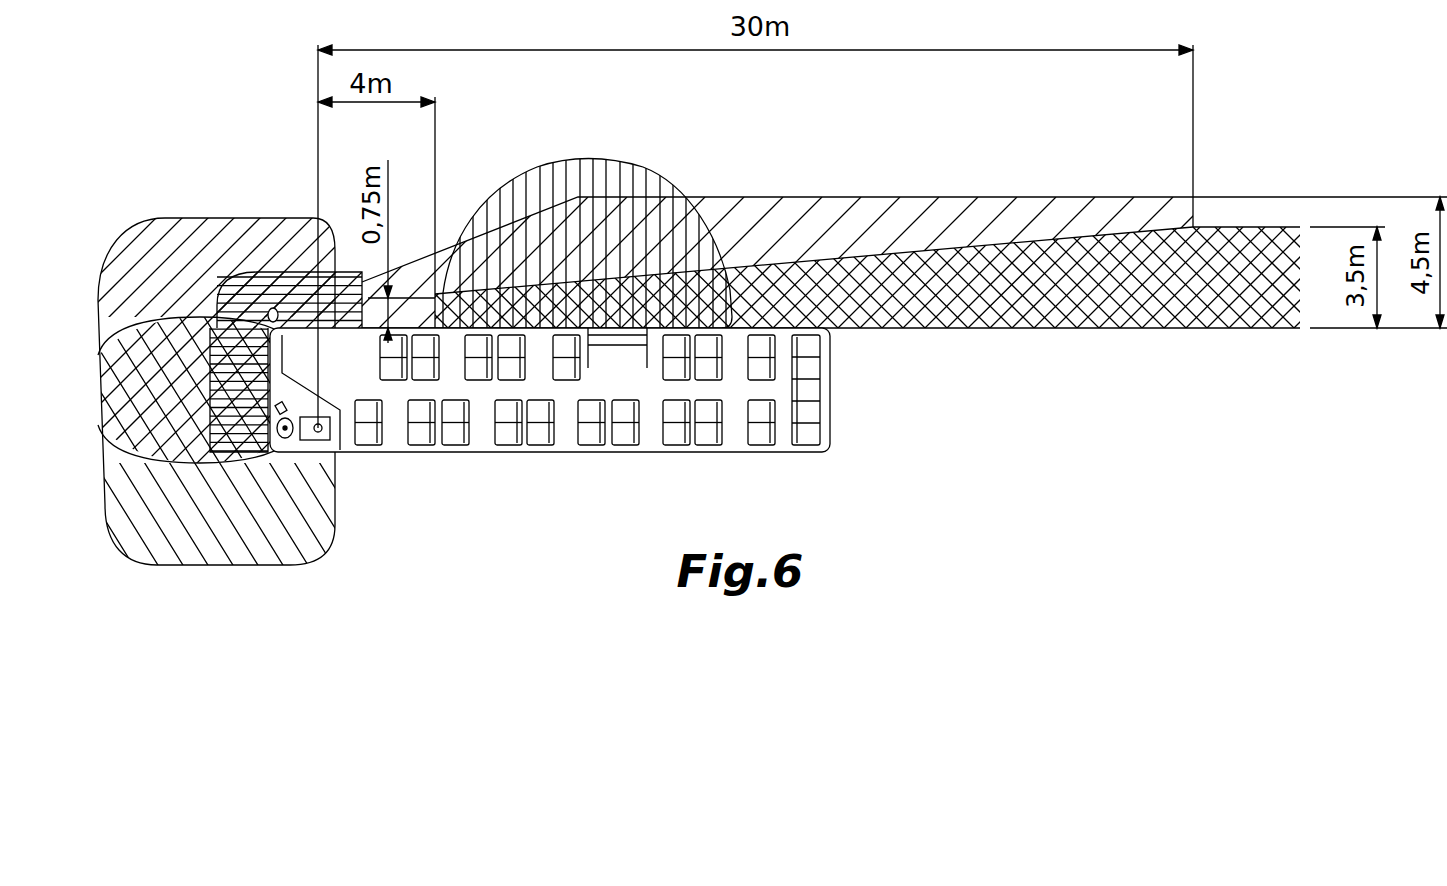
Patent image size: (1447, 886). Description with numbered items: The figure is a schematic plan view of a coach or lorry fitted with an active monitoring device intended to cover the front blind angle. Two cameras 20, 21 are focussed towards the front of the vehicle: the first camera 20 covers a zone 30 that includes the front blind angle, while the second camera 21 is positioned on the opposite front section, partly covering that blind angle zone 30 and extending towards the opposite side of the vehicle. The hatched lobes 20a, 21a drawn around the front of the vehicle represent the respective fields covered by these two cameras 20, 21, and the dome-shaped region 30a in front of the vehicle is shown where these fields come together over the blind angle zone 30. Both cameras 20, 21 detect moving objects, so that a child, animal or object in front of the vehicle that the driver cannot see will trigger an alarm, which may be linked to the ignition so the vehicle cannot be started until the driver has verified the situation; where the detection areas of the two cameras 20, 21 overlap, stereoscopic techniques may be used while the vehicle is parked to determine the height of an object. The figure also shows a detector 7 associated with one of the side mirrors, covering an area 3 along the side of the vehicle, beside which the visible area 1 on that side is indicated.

The visible area 1 is at (993, 273).
The area 3 is at (838, 213).
The detector 7 is at (276, 316).
The camera 20 is at (271, 462).
The lower detection lobe 20a is at (217, 557).
The camera 21 is at (277, 318).
The upper detection lobe 21a is at (167, 223).
The zone 30 is at (587, 323).
The dome-shaped detection region 30a is at (633, 178).